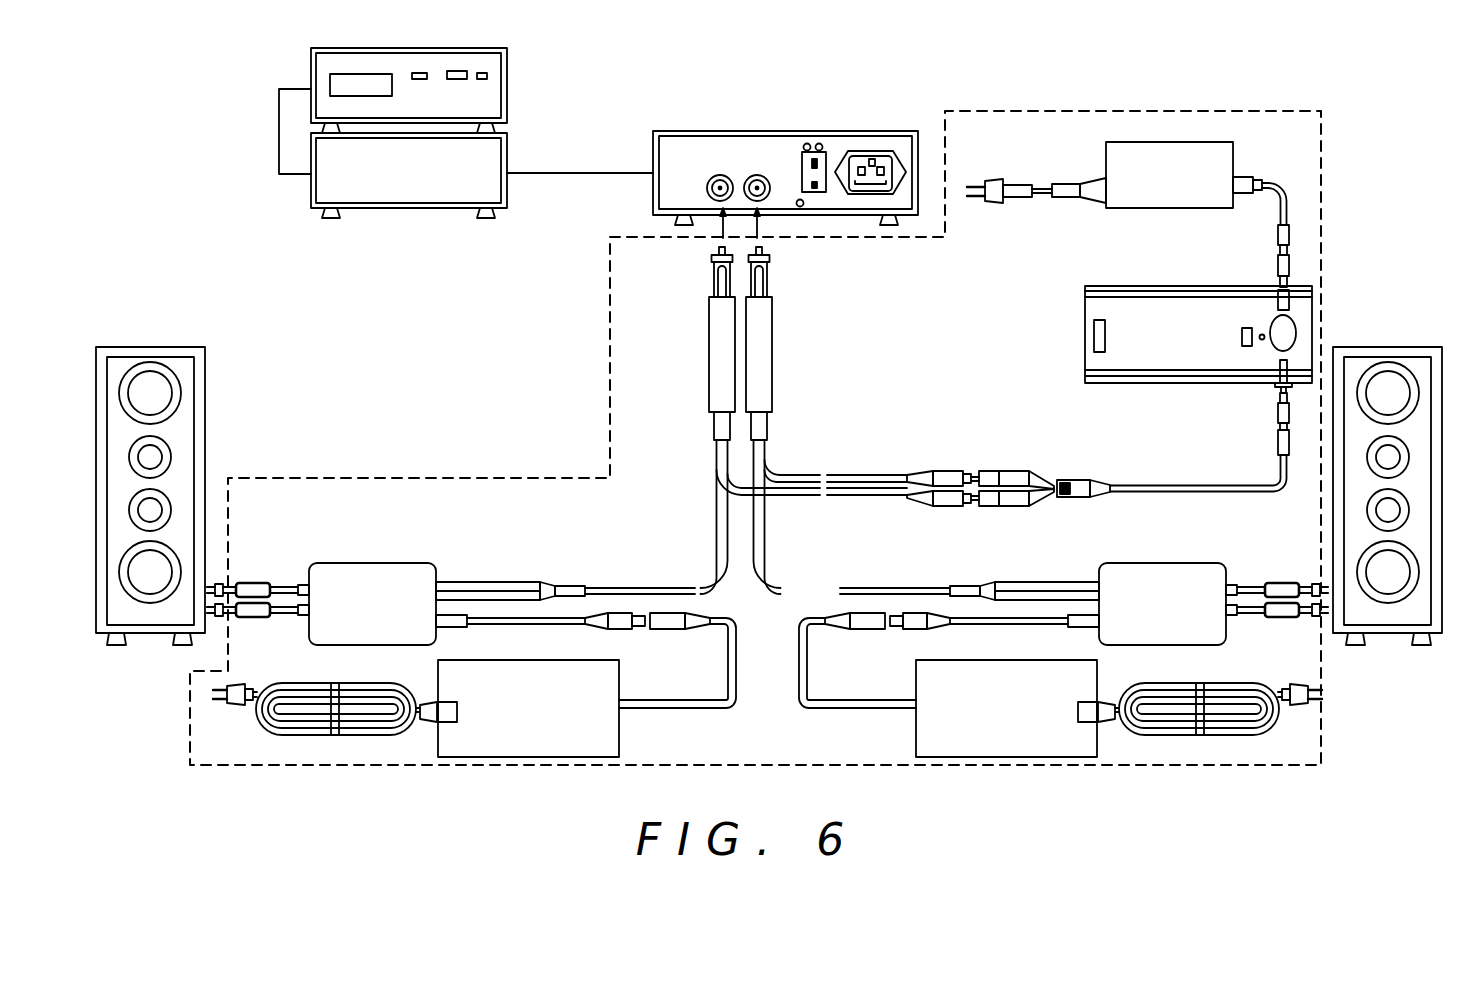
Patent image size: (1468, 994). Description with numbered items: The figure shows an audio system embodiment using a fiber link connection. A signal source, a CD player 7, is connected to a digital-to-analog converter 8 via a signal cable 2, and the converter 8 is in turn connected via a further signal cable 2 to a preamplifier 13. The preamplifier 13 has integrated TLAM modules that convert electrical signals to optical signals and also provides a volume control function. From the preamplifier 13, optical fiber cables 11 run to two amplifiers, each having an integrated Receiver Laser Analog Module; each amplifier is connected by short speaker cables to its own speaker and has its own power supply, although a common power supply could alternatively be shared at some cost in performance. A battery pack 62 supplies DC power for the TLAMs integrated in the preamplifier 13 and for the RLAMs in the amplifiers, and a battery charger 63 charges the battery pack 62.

The signal cable 2 is at (279, 128).
The CD player 7 is at (483, 53).
The digital-to-analog converter 8 is at (430, 208).
The optical fiber cable 11 is at (716, 551).
The preamplifier 13 is at (860, 140).
The battery pack 62 is at (1208, 385).
The battery charger 63 is at (1208, 141).